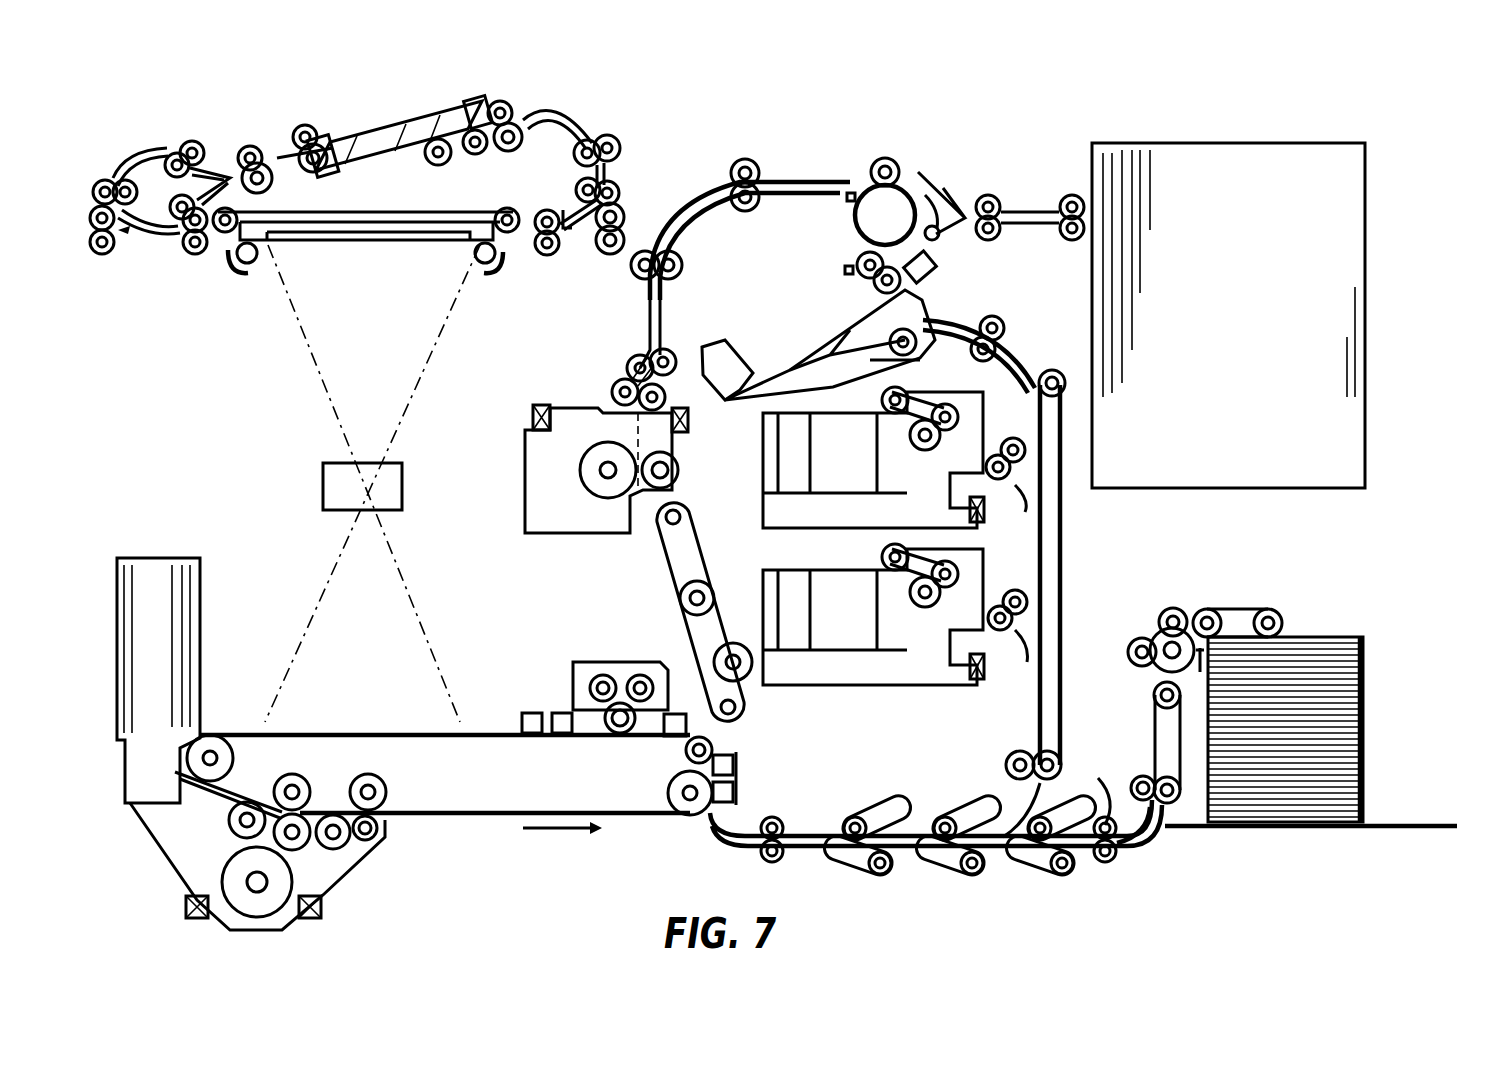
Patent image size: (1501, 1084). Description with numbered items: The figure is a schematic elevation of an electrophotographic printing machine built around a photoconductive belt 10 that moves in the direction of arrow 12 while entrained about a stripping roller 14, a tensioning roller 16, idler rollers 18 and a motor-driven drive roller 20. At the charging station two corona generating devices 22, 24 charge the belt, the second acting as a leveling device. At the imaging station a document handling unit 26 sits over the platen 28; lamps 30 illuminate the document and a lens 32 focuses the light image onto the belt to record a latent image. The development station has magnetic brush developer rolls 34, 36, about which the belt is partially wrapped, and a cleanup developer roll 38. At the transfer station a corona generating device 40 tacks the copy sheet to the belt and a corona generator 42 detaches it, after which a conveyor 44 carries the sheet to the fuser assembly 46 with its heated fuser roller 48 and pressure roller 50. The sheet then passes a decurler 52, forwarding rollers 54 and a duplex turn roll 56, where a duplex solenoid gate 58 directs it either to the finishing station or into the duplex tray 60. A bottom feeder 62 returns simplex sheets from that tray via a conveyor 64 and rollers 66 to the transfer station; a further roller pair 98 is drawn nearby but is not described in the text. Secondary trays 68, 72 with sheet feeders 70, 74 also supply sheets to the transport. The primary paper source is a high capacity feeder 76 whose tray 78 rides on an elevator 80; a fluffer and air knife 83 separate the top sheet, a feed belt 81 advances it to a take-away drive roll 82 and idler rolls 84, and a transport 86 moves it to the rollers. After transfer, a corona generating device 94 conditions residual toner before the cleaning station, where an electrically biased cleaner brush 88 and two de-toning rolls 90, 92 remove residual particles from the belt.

The photoconductive belt 10 is at (425, 815).
The arrow 12 is at (567, 830).
The stripping roller 14 is at (688, 752).
The tensioning roller 16 is at (215, 735).
The idler rollers 18 is at (368, 785).
The drive roller 20 is at (684, 815).
The corona generating device 22 is at (560, 715).
The corona generating device 24 is at (522, 725).
The document handling unit 26 is at (590, 99).
The platen 28 is at (333, 232).
The lamps 30 is at (252, 265).
The lens 32 is at (397, 497).
The magnetic brush developer roll 34 is at (240, 822).
The magnetic brush developer roll 36 is at (282, 838).
The developer roll 38 is at (338, 845).
The corona generating device 40 is at (733, 797).
The corona generator 42 is at (733, 758).
The conveyor 44 is at (665, 573).
The fuser assembly 46 is at (596, 371).
The fuser roller 48 is at (593, 483).
The pressure roller 50 is at (670, 468).
The decurler 52 is at (653, 333).
The forwarding rollers 54 is at (751, 160).
The duplex turn roll 56 is at (872, 215).
The duplex solenoid gate 58 is at (938, 222).
The duplex tray 60 is at (785, 355).
The bottom feeder 62 is at (897, 362).
The conveyor 64 is at (1063, 583).
The rollers 66 is at (868, 815).
The secondary tray 68 is at (820, 512).
The sheet feeder 70 is at (925, 386).
The secondary tray 72 is at (825, 635).
The sheet feeder 74 is at (922, 552).
The high capacity feeder 76 is at (1411, 698).
The tray 78 is at (1322, 826).
The elevator 80 is at (1430, 830).
The feed belt 81 is at (1266, 607).
The take-away drive roll 82 is at (1150, 650).
The fluffer and air knife 83 is at (1210, 627).
The idler rolls 84 is at (1178, 609).
The transport 86 is at (1153, 737).
The cleaner brush 88 is at (605, 728).
The de-toning roll 90 is at (596, 680).
The de-toning roll 92 is at (646, 680).
The corona generating device 94 is at (690, 726).
The roller pairs 98 is at (1072, 194).